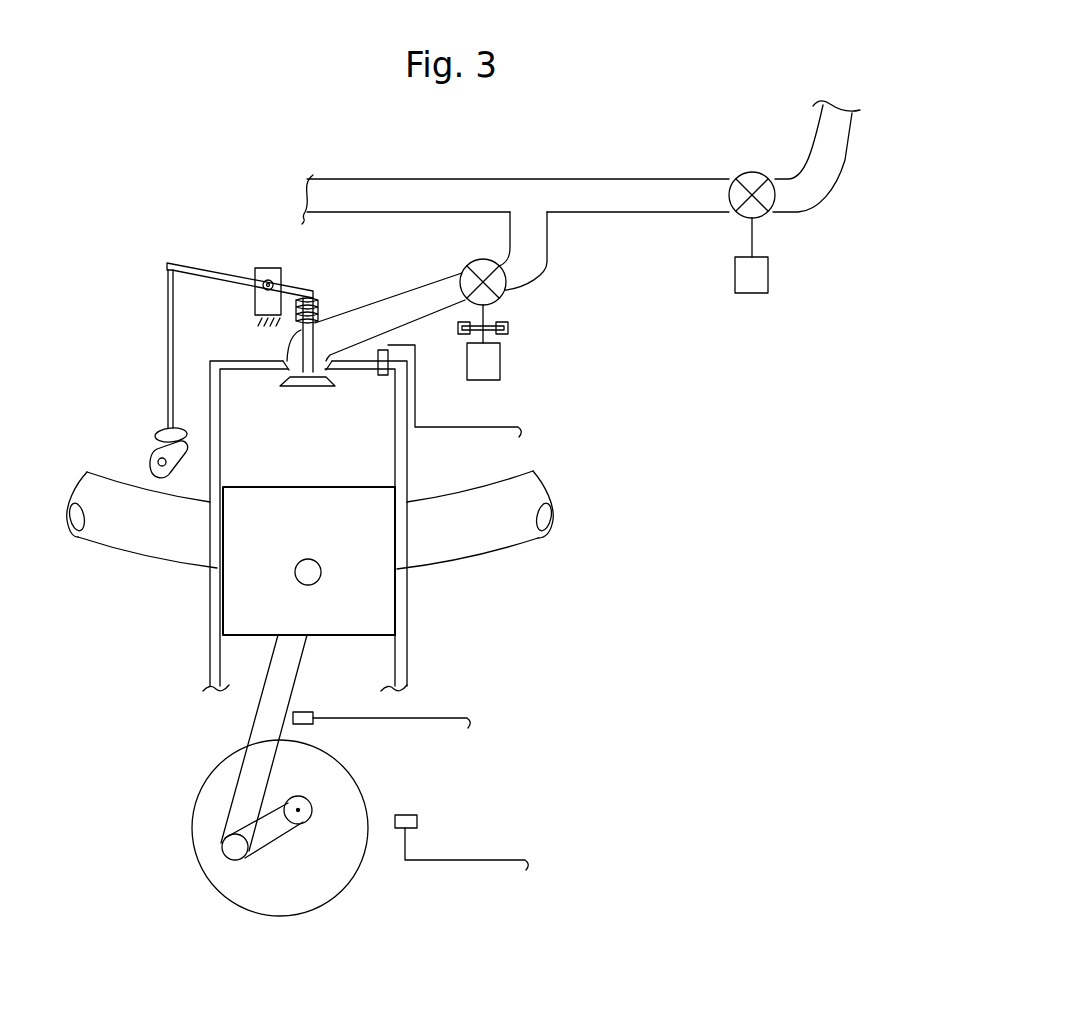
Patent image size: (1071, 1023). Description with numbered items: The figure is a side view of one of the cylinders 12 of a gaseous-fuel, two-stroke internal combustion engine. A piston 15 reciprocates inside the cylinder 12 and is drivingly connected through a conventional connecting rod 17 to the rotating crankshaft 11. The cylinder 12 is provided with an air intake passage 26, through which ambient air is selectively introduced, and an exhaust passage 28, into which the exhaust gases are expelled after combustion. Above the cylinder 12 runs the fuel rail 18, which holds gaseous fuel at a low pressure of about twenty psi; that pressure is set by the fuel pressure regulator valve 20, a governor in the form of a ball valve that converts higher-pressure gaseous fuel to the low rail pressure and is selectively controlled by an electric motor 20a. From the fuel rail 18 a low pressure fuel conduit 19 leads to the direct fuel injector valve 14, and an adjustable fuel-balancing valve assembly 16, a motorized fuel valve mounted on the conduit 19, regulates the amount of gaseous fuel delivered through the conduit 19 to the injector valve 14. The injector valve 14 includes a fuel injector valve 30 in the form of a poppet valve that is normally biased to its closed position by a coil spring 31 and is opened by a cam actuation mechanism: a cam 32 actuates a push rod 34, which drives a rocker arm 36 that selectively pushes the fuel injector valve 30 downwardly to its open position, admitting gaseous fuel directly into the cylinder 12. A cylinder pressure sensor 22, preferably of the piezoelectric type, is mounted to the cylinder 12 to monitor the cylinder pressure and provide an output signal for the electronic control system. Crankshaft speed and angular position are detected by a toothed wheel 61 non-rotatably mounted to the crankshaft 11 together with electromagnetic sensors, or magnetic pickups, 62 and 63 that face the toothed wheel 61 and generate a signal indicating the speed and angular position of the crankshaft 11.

The crankshaft 11 is at (300, 811).
The cylinder 12 is at (210, 397).
The direct fuel injector valve 14 is at (327, 288).
The piston 15 is at (335, 487).
The adjustable fuel-balancing valve assembly 16 is at (524, 311).
The connecting rod 17 is at (300, 660).
The fuel rail 18 is at (440, 179).
The low pressure fuel conduit 19 is at (548, 262).
The fuel pressure regulator valve 20 is at (737, 170).
The electric motor 20a is at (768, 278).
The cylinder pressure sensor 22 is at (382, 376).
The air intake passage 26 is at (135, 556).
The exhaust passage 28 is at (483, 556).
The fuel injector valve 30 is at (310, 383).
The coil spring 31 is at (320, 301).
The cam 32 is at (152, 455).
The push rod 34 is at (167, 328).
The rocker arm 36 is at (213, 272).
The toothed wheel 61 is at (362, 770).
The electromagnetic sensor 62 is at (305, 712).
The rotation sensor 63 is at (418, 822).